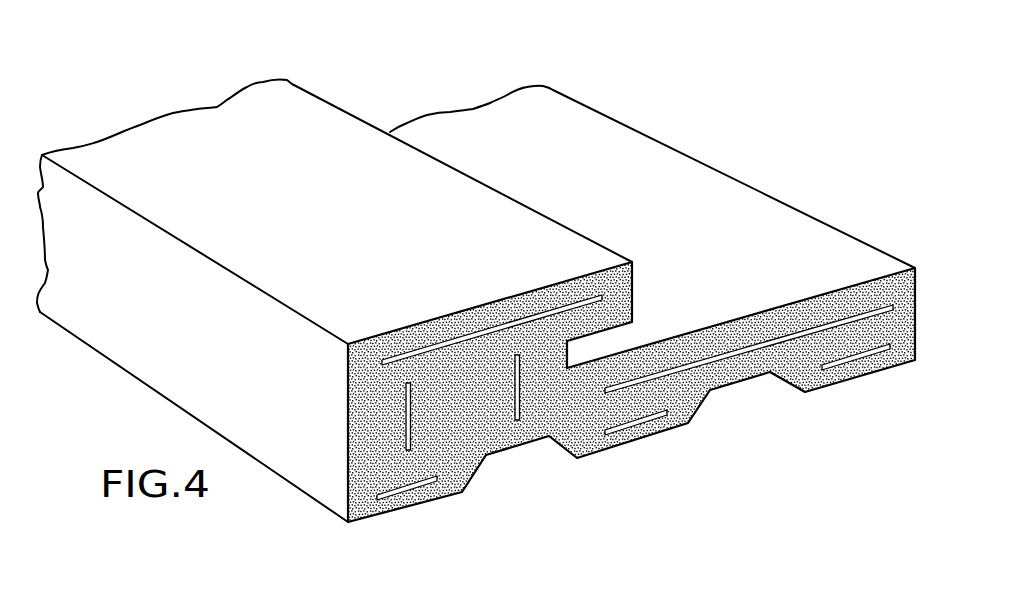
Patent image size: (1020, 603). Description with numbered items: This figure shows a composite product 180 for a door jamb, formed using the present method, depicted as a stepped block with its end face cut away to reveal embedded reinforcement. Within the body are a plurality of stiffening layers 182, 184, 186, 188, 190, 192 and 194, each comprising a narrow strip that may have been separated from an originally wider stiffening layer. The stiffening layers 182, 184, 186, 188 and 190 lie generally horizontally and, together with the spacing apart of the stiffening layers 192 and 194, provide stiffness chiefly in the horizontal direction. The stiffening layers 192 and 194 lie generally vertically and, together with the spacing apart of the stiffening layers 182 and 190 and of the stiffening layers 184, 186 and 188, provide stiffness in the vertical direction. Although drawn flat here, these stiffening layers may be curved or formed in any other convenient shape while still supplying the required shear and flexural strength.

The composite product 180 is at (782, 150).
The stiffening layer 182 is at (510, 322).
The stiffening layer 184 is at (655, 380).
The stiffening layer 186 is at (888, 346).
The stiffening layer 188 is at (640, 428).
The stiffening layer 190 is at (413, 503).
The stiffening layer 192 is at (506, 408).
The stiffening layer 194 is at (415, 392).